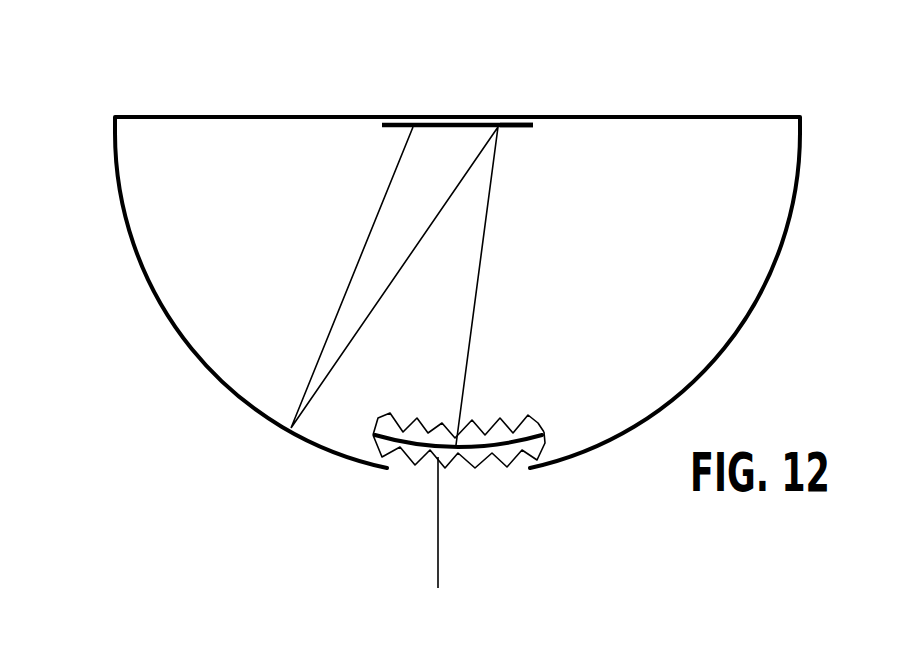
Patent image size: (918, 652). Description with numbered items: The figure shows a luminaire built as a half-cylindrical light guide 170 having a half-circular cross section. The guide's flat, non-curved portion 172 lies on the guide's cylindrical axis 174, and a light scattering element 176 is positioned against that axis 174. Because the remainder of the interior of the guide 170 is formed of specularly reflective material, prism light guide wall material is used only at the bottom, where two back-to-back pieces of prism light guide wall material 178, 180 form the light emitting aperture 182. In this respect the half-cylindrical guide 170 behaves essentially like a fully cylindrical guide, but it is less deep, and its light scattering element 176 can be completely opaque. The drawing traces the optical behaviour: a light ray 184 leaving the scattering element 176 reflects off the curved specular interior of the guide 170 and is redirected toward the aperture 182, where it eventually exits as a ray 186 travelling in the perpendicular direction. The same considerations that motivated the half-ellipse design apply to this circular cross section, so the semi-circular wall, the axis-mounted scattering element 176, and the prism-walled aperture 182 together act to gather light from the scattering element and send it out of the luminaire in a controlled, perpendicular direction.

The half-cylindrical light guide 170 is at (173, 355).
The non-curved portion 172 is at (608, 116).
The cylindrical axis 174 is at (452, 113).
The light scattering element 176 is at (522, 130).
The prism light guide wall material 178 is at (505, 420).
The prism light guide wall material 180 is at (508, 465).
The light emitting aperture 182 is at (415, 476).
The light ray 184 is at (413, 127).
The exiting ray 186 is at (435, 541).